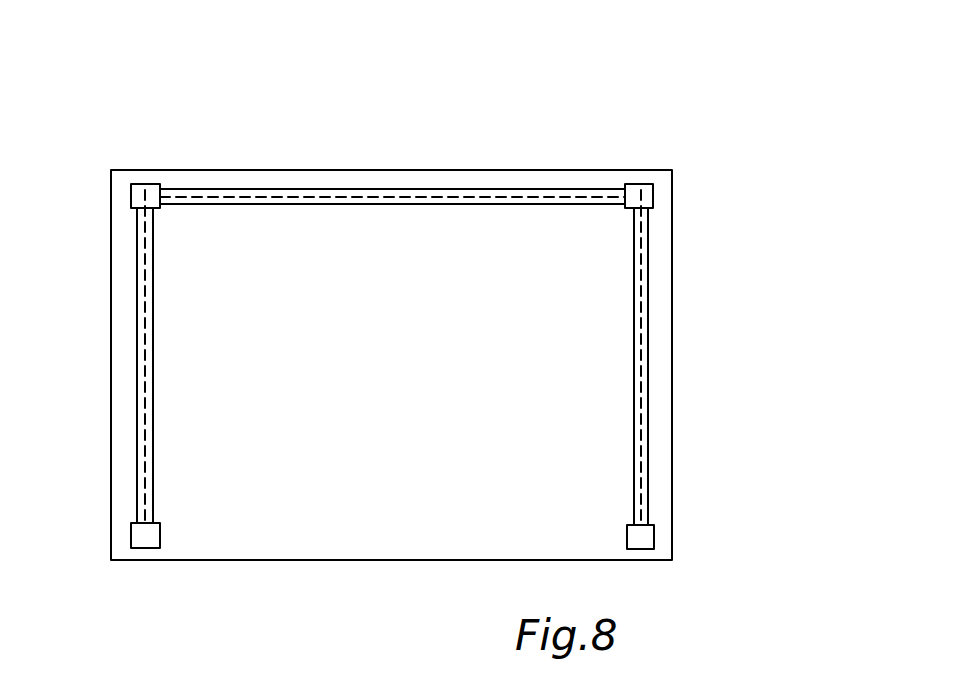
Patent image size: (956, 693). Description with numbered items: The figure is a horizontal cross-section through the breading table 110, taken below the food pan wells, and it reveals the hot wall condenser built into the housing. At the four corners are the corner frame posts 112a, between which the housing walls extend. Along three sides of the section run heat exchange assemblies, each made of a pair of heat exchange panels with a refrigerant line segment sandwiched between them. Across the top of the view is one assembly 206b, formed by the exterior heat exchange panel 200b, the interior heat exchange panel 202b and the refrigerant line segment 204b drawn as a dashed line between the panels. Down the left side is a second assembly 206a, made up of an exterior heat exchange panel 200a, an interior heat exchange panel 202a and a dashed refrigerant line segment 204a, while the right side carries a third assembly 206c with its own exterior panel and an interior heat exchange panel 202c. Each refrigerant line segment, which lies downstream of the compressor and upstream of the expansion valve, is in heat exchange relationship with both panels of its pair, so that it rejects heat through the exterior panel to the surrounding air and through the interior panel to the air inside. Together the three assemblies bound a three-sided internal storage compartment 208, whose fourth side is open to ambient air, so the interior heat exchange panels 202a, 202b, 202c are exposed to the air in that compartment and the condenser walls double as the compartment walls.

The breading table 110 is at (585, 95).
The corner frame post 112a is at (177, 137).
The exterior heat exchange panel 200a is at (398, 369).
The exterior heat exchange panel 200b is at (392, 206).
The interior heat exchange panel 202a is at (153, 470).
The interior heat exchange panel 202b is at (425, 205).
The interior heat exchange panel 202c is at (636, 383).
The refrigerant line segment 204a is at (149, 427).
The refrigerant line segment 204b is at (370, 198).
The heat exchange assembly 206a is at (156, 500).
The heat exchange assembly 206b is at (549, 208).
The heat exchange assembly 206c is at (632, 508).
The internal storage compartment 208 is at (414, 407).